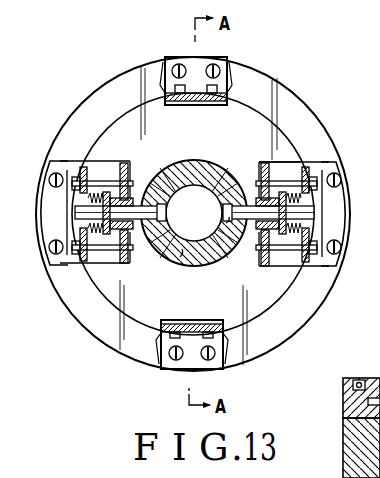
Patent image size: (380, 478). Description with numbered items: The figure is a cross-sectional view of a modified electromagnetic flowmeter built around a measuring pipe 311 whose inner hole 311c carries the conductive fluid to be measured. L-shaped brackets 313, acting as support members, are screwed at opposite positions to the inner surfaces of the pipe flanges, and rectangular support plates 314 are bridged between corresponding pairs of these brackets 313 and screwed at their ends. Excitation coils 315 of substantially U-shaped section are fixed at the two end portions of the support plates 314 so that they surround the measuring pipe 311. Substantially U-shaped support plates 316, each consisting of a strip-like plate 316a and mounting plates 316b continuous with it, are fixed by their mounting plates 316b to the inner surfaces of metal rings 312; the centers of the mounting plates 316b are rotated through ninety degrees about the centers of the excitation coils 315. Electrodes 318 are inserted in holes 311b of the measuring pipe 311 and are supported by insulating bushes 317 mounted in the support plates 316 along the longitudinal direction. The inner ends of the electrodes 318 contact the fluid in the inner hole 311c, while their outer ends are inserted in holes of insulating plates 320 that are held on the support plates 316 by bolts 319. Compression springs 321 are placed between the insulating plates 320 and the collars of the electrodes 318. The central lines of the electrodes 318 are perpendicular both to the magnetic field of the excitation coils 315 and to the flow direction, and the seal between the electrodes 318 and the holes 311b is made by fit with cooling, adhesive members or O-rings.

The measuring pipe 311 is at (283, 128).
The holes 311b is at (172, 213).
The inner hole 311c is at (180, 257).
The metal rings 312 is at (290, 97).
The L-shaped brackets 313 is at (227, 77).
The rectangular support plates 314 is at (163, 62).
The excitation coils 315 is at (350, 447).
The support plates 316 is at (72, 273).
The strip-like plate 316a is at (262, 160).
The mounting plates 316b is at (58, 161).
The insulating bushes 317 is at (112, 192).
The electrodes 318 is at (126, 263).
The bolts 319 is at (88, 168).
The insulating plates 320 is at (66, 197).
The compression springs 321 is at (62, 236).